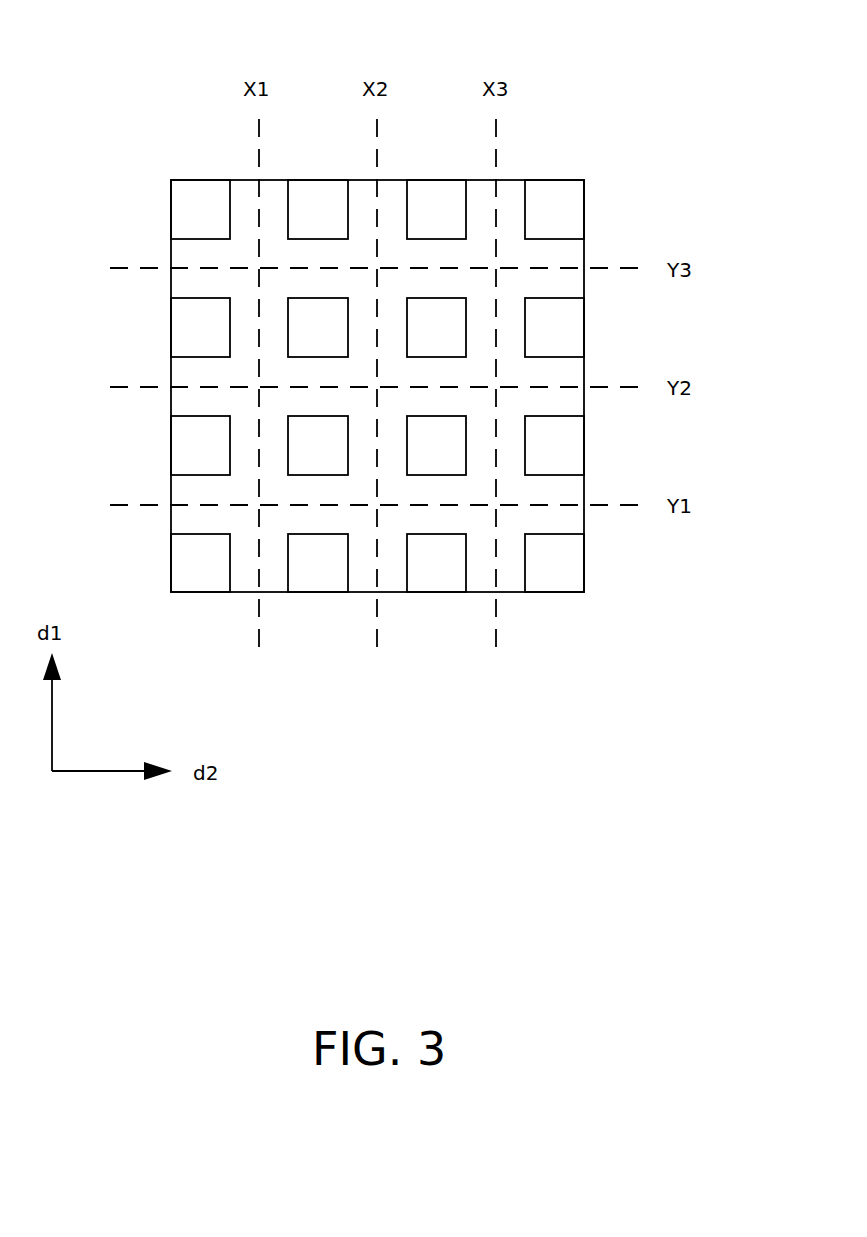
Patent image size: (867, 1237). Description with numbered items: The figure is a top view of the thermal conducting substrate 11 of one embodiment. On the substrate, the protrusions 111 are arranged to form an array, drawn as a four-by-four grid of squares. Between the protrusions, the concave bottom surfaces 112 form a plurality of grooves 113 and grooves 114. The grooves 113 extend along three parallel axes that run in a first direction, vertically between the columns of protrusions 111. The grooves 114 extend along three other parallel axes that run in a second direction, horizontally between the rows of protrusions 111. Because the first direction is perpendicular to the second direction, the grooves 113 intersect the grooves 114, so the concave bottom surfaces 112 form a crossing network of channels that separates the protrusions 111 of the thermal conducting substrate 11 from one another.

The thermal conducting substrate 11 is at (84, 28).
The protrusions 111 is at (203, 186).
The concave bottom surfaces 112 is at (242, 216).
The grooves 113 is at (247, 155).
The grooves 114 is at (608, 248).